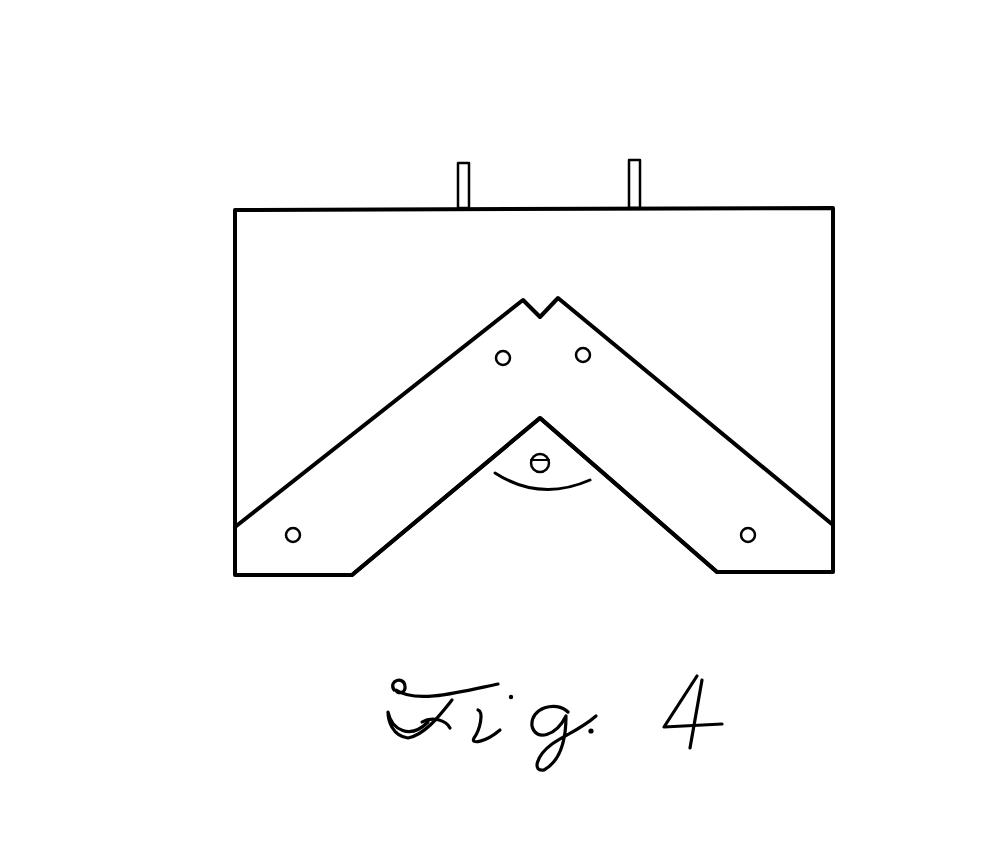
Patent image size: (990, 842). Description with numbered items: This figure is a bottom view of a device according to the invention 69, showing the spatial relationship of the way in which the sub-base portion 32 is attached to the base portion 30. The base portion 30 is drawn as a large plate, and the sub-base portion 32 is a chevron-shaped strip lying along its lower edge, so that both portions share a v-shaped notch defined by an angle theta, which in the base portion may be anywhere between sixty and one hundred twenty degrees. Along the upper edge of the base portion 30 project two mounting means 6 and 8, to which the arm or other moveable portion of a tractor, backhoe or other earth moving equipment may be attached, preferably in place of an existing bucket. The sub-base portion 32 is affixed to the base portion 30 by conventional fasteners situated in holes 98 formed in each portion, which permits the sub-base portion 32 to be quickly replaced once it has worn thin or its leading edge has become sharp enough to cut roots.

The device according to the invention 69 is at (192, 156).
The base portion 30 is at (778, 323).
The sub-base portion 32 is at (778, 530).
The mounting means 6 is at (460, 184).
The mounting means 8 is at (641, 178).
The holes 98 is at (579, 347).